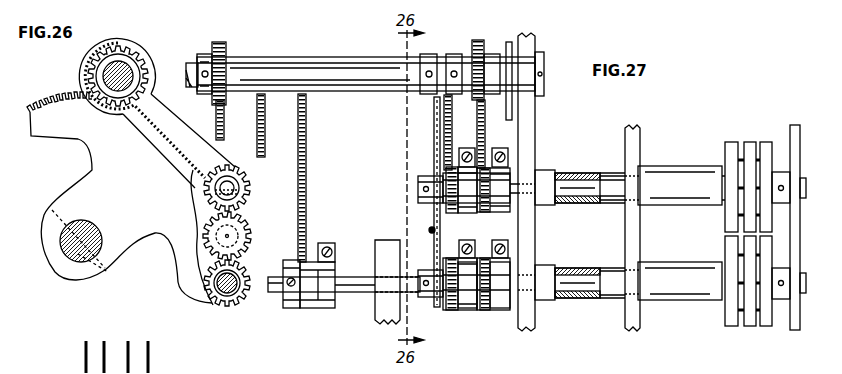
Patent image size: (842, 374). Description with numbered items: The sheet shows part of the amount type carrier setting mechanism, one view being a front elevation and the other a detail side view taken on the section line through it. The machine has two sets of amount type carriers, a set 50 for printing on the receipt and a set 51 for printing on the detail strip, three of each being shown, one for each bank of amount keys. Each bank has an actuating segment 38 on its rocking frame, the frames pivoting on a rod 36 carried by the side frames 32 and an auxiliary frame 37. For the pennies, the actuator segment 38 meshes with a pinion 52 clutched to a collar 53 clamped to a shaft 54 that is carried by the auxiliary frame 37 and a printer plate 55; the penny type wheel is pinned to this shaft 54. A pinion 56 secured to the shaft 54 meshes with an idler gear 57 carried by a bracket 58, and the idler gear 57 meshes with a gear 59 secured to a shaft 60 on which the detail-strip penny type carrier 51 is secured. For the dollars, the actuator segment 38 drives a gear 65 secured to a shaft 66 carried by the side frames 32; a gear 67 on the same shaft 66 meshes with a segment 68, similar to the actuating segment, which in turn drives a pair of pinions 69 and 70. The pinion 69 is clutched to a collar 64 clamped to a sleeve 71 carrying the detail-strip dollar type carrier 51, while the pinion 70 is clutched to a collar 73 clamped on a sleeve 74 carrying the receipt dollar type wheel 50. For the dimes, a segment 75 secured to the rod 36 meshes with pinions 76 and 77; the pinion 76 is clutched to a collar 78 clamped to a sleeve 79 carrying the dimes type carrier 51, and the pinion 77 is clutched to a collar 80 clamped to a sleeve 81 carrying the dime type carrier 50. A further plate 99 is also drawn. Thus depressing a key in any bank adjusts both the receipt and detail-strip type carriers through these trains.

In FIG. 27, the side frame 32 is at (537, 103).
In FIG. 26, the rod 36 is at (78, 256).
In FIG. 27, the auxiliary frame 37 is at (378, 314).
In FIG. 27, the actuating segment 38 is at (225, 128).
In FIG. 27, the amount type carrier 50 is at (765, 326).
In FIG. 27, the amount type carrier 51 is at (765, 142).
In FIG. 27, the pinion 52 is at (304, 306).
In FIG. 27, the collar 53 is at (325, 310).
In FIG. 26, the shaft 54 is at (222, 300).
In FIG. 27, the shaft 54 is at (345, 277).
In FIG. 27, the printer plate 55 is at (796, 326).
In FIG. 26, the pinion 56 is at (231, 305).
In FIG. 27, the pinion 56 is at (437, 300).
In FIG. 26, the idler gear 57 is at (250, 233).
In FIG. 27, the idler gear 57 is at (436, 221).
In FIG. 26, the bracket 58 is at (166, 152).
In FIG. 26, the gear 59 is at (249, 187).
In FIG. 27, the gear 59 is at (437, 170).
In FIG. 26, the shaft 60 is at (240, 193).
In FIG. 27, the shaft 60 is at (570, 172).
In FIG. 27, the collar 64 is at (502, 176).
In FIG. 27, the gear 65 is at (225, 58).
In FIG. 26, the shaft 66 is at (124, 60).
In FIG. 27, the shaft 66 is at (348, 78).
In FIG. 27, the gear 67 is at (480, 42).
In FIG. 27, the segment 68 is at (486, 139).
In FIG. 27, the pinion 69 is at (488, 214).
In FIG. 27, the pinion 70 is at (488, 311).
In FIG. 27, the sleeve 71 is at (600, 172).
In FIG. 27, the collar 73 is at (504, 312).
In FIG. 27, the sleeve 74 is at (608, 274).
In FIG. 26, the segment 75 is at (62, 110).
In FIG. 27, the segment 75 is at (452, 136).
In FIG. 27, the pinion 76 is at (451, 201).
In FIG. 27, the pinion 77 is at (456, 311).
In FIG. 27, the collar 78 is at (466, 214).
In FIG. 27, the sleeve 79 is at (585, 172).
In FIG. 27, the collar 80 is at (469, 312).
In FIG. 27, the sleeve 81 is at (590, 300).
In FIG. 27, the support plate 99 is at (636, 147).